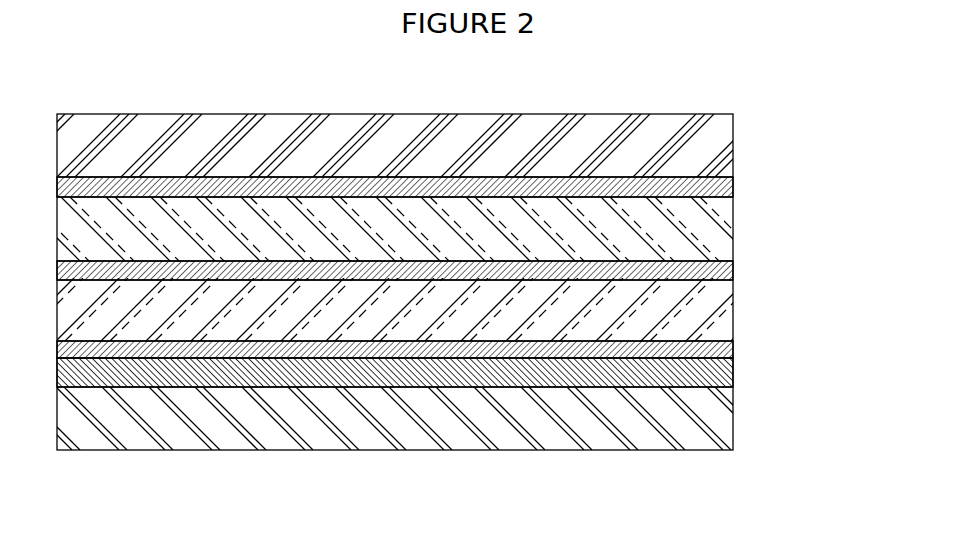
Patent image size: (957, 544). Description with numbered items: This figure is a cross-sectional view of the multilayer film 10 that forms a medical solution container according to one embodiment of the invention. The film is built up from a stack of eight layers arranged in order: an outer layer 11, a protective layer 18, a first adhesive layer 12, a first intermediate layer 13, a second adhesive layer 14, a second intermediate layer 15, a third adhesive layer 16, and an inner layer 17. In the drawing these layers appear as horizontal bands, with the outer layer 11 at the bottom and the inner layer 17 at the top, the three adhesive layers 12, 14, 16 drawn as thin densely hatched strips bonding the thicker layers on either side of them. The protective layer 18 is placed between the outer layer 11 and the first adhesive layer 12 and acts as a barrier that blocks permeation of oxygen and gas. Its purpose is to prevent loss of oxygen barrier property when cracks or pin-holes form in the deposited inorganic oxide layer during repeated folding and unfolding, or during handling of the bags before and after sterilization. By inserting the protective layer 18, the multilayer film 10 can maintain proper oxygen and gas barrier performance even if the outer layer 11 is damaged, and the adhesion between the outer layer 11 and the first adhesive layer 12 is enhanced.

The multilayer film 10 is at (475, 537).
The outer layer 11 is at (733, 413).
The protective layer 18 is at (733, 367).
The first adhesive layer 12 is at (733, 342).
The first intermediate layer 13 is at (733, 308).
The second adhesive layer 14 is at (733, 263).
The second intermediate layer 15 is at (733, 232).
The third adhesive layer 16 is at (733, 178).
The inner layer 17 is at (733, 125).